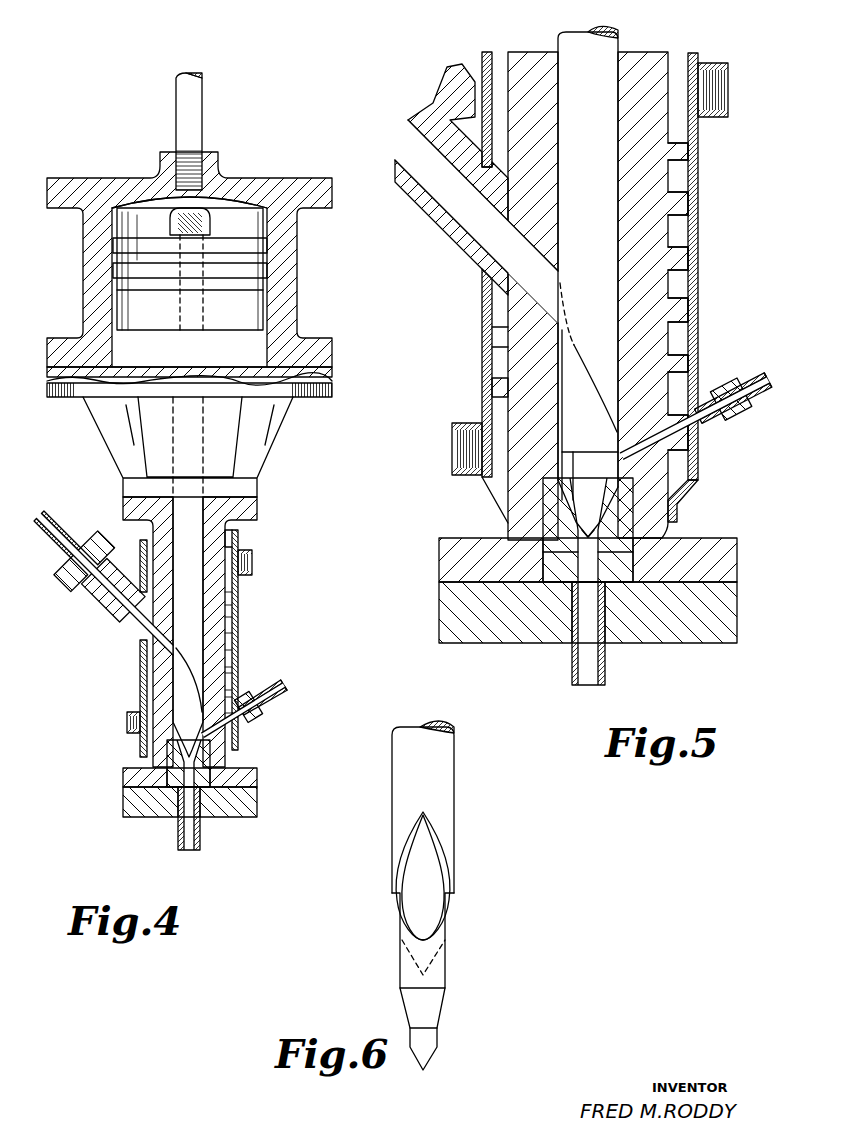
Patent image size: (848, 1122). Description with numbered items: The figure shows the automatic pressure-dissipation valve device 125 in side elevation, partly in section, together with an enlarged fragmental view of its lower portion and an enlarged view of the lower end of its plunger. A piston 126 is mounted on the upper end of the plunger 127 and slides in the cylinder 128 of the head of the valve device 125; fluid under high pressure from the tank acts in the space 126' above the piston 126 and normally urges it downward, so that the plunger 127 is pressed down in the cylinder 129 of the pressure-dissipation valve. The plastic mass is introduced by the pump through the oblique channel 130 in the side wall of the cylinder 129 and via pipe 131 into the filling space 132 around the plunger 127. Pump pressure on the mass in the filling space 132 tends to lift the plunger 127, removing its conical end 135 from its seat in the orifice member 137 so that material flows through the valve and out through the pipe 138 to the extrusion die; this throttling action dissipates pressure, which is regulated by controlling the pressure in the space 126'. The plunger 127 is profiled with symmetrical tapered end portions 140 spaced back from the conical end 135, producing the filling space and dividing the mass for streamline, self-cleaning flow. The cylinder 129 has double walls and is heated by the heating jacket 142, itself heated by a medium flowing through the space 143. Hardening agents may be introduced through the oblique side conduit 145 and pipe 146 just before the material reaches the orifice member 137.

In FIG. 4, the valve device 125 is at (255, 176).
In FIG. 4, the piston 126 is at (240, 269).
In FIG. 4, the space above the piston 126' is at (176, 167).
In FIG. 4, the plunger 127 is at (187, 597).
In FIG. 5, the plunger 127 is at (590, 183).
In FIG. 6, the plunger 127 is at (430, 765).
In FIG. 4, the cylinder 128 is at (297, 395).
In FIG. 4, the cylinder of the pressure-dissipation valve 129 is at (203, 650).
In FIG. 5, the cylinder of the pressure-dissipation valve 129 is at (618, 243).
In FIG. 4, the oblique channel 130 is at (123, 612).
In FIG. 5, the oblique channel 130 is at (465, 192).
In FIG. 4, the pipe 131 is at (50, 525).
In FIG. 5, the filling space 132 is at (563, 353).
In FIG. 5, the conical end 135 is at (586, 513).
In FIG. 6, the conical end 135 is at (425, 1058).
In FIG. 4, the orifice member 137 is at (178, 763).
In FIG. 5, the orifice member 137 is at (613, 532).
In FIG. 4, the pipe 138 is at (178, 835).
In FIG. 5, the pipe 138 is at (603, 668).
In FIG. 6, the symmetrical tapered end portions 140 is at (398, 900).
In FIG. 5, the heating jacket 142 is at (483, 315).
In FIG. 5, the space 143 is at (677, 285).
In FIG. 4, the oblique side conduit 145 is at (243, 721).
In FIG. 5, the oblique side conduit 145 is at (702, 415).
In FIG. 5, the pipe 146 is at (747, 378).